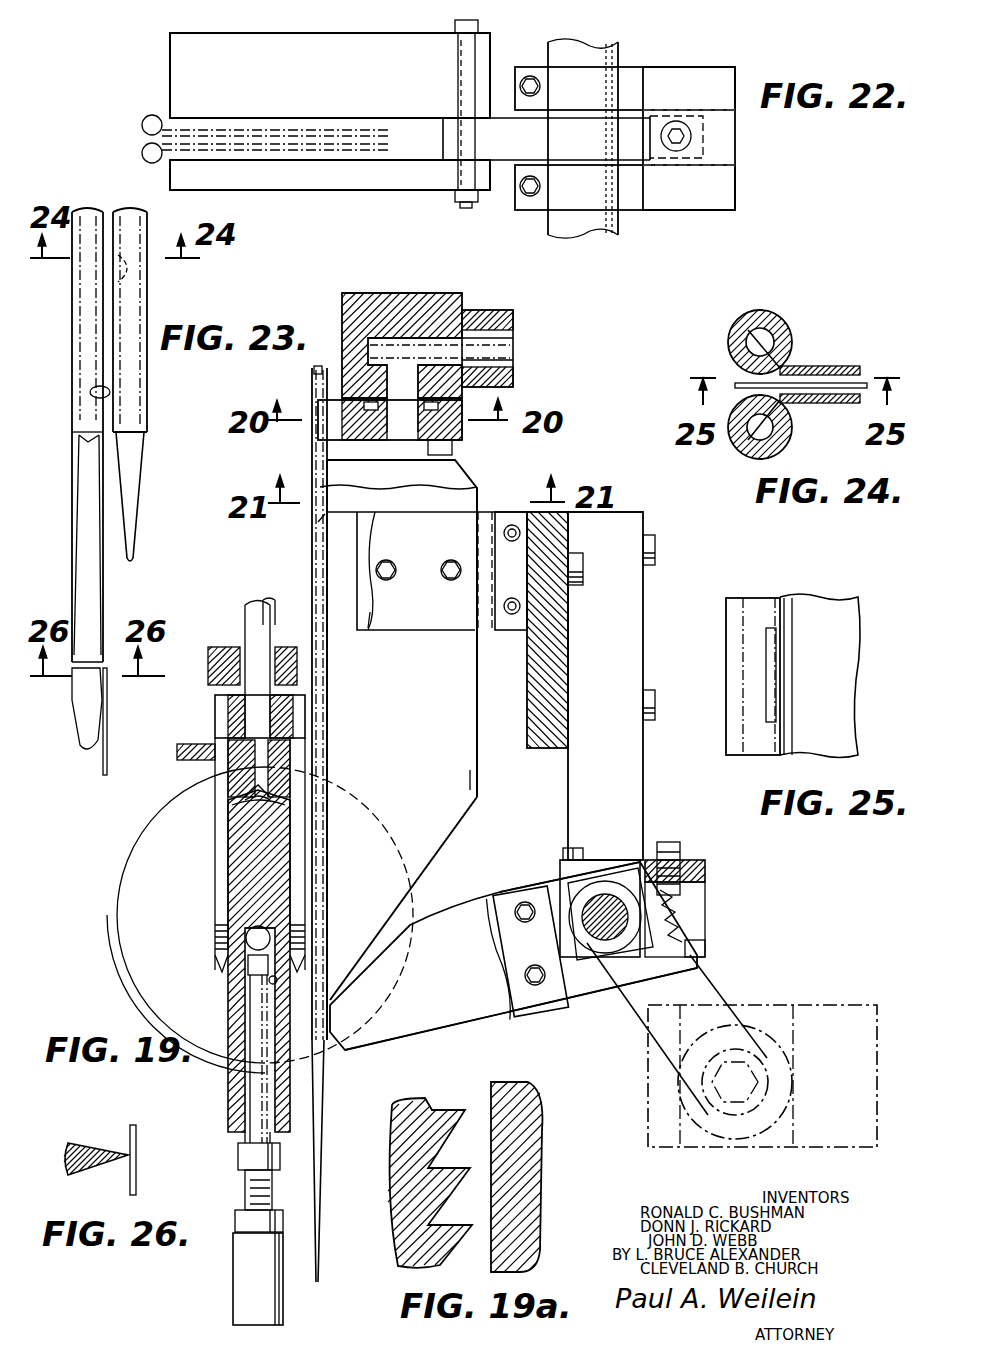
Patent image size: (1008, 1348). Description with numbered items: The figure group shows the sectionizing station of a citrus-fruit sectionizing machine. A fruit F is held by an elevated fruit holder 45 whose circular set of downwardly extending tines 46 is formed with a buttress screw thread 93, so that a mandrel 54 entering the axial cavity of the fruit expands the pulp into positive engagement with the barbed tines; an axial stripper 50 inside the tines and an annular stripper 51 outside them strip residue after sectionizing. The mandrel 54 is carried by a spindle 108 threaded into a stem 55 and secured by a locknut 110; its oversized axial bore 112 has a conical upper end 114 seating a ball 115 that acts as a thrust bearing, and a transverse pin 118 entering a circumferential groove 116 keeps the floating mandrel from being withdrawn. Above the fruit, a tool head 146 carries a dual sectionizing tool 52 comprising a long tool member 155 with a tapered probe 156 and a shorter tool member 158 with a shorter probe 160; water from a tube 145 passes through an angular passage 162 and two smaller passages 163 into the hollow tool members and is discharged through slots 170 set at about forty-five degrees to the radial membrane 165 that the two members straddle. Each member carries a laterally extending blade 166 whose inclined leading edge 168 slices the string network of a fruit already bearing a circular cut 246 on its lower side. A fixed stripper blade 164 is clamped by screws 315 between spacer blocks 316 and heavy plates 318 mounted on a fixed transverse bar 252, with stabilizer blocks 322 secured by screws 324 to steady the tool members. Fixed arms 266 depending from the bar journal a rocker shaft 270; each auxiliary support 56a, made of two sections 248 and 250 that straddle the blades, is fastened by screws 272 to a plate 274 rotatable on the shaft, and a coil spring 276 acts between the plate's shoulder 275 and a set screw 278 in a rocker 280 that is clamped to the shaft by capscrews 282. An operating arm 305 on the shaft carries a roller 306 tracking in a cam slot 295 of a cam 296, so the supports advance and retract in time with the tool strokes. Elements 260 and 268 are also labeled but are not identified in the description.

In FIG. 22, the auxiliary support section 248 is at (178, 46).
In FIG. 19, the auxiliary support section 248 is at (455, 925).
In FIG. 22, the auxiliary support section 250 is at (284, 182).
In FIG. 19, the auxiliary support section 250 is at (527, 1012).
In FIG. 22, the blade 166 is at (218, 136).
In FIG. 23, the blade 166 is at (100, 400).
In FIG. 24, the blade 166 is at (808, 366).
In FIG. 25, the blade 166 is at (835, 612).
In FIG. 19, the blade 166 is at (470, 778).
In FIG. 22, the sectionizing tool member 158 is at (147, 116).
In FIG. 23, the sectionizing tool member 158 is at (150, 374).
In FIG. 24, the sectionizing tool member 158 is at (790, 312).
In FIG. 25, the sectionizing tool member 158 is at (768, 598).
In FIG. 22, the sectionizing tool member 155 is at (142, 153).
In FIG. 23, the sectionizing tool member 155 is at (72, 342).
In FIG. 24, the sectionizing tool member 155 is at (740, 458).
In FIG. 19, the sectionizing tool member 155 is at (312, 552).
In FIG. 22, the screws 272 is at (478, 25).
In FIG. 19, the screws 272 is at (526, 975).
In FIG. 22, the plate 274 is at (573, 138).
In FIG. 19, the plate 274 is at (580, 982).
In FIG. 22, the capscrews 282 is at (540, 86).
In FIG. 19, the capscrews 282 is at (565, 856).
In FIG. 22, the set screw 278 is at (692, 136).
In FIG. 19, the set screw 278 is at (665, 844).
In FIG. 22, the rocker 280 is at (722, 185).
In FIG. 19, the rocker 280 is at (698, 905).
In FIG. 22, the rocker shaft 270 is at (600, 228).
In FIG. 19, the rocker shaft 270 is at (605, 900).
In FIG. 23, the longitudinal slots 170 is at (125, 270).
In FIG. 24, the longitudinal slots 170 is at (770, 368).
In FIG. 25, the longitudinal slots 170 is at (770, 702).
In FIG. 23, the probe 160 is at (137, 470).
In FIG. 23, the probe 156 is at (80, 550).
In FIG. 19, the probe 156 is at (320, 1104).
In FIG. 26, the probe 156 is at (76, 1147).
In FIG. 23, the radial membrane 165 is at (103, 764).
In FIG. 24, the radial membrane 165 is at (822, 386).
In FIG. 26, the radial membrane 165 is at (137, 1174).
In FIG. 19, the tool head 146 is at (385, 292).
In FIG. 19, the angular water passage 162 is at (435, 350).
In FIG. 19, the tube 145 is at (470, 335).
In FIG. 19, the passages 163 is at (355, 426).
In FIG. 19, the stripper blade 164 is at (320, 522).
In FIG. 19, the dual sectionizing tool 52 is at (482, 487).
In FIG. 19, the spacer blocks 316 is at (500, 510).
In FIG. 19, the heavy plates 318 is at (416, 571).
In FIG. 19, the screws 324 is at (441, 576).
In FIG. 19, the stabilizer blocks 322 is at (370, 622).
In FIG. 19, the screws 315 is at (512, 616).
In FIG. 19, the fixed transverse bar 252 is at (552, 622).
In FIG. 19, the screw 260 is at (578, 560).
In FIG. 19, the screw 268 is at (652, 550).
In FIG. 19, the fixed arms 266 is at (632, 782).
In FIG. 19, the inclined leading edge 168 is at (435, 860).
In FIG. 19, the mandrel 54 is at (300, 876).
In FIG. 19A, the mandrel 54 is at (523, 1160).
In FIG. 19, the transverse pin 118 is at (280, 978).
In FIG. 19, the conical upper end 114 is at (255, 926).
In FIG. 19, the ball 115 is at (250, 940).
In FIG. 19, the circumferential groove 116 is at (253, 983).
In FIG. 19, the circular cut 246 is at (340, 1025).
In FIG. 19, the spindle 108 is at (258, 1062).
In FIG. 19, the axial bore 112 is at (250, 1092).
In FIG. 19, the locknut 110 is at (240, 1224).
In FIG. 19, the stem 55 is at (243, 1277).
In FIG. 19, the fruit holder 45 is at (213, 714).
In FIG. 19, the annular stripper 51 is at (192, 763).
In FIG. 19, the axial stripper 50 is at (225, 792).
In FIG. 19, the tines 46 is at (225, 842).
In FIG. 19A, the tines 46 is at (408, 1225).
In FIG. 19, the fruit F is at (160, 855).
In FIG. 19, the auxiliary support 56a is at (468, 1025).
In FIG. 19, the coil spring 276 is at (700, 893).
In FIG. 19, the shoulder 275 is at (695, 945).
In FIG. 19, the cam 296 is at (858, 1005).
In FIG. 19, the operating arm 305 is at (705, 988).
In FIG. 19, the roller 306 is at (760, 1035).
In FIG. 19, the cam slot 295 is at (683, 1128).
In FIG. 19A, the buttress screw thread 93 is at (415, 1190).